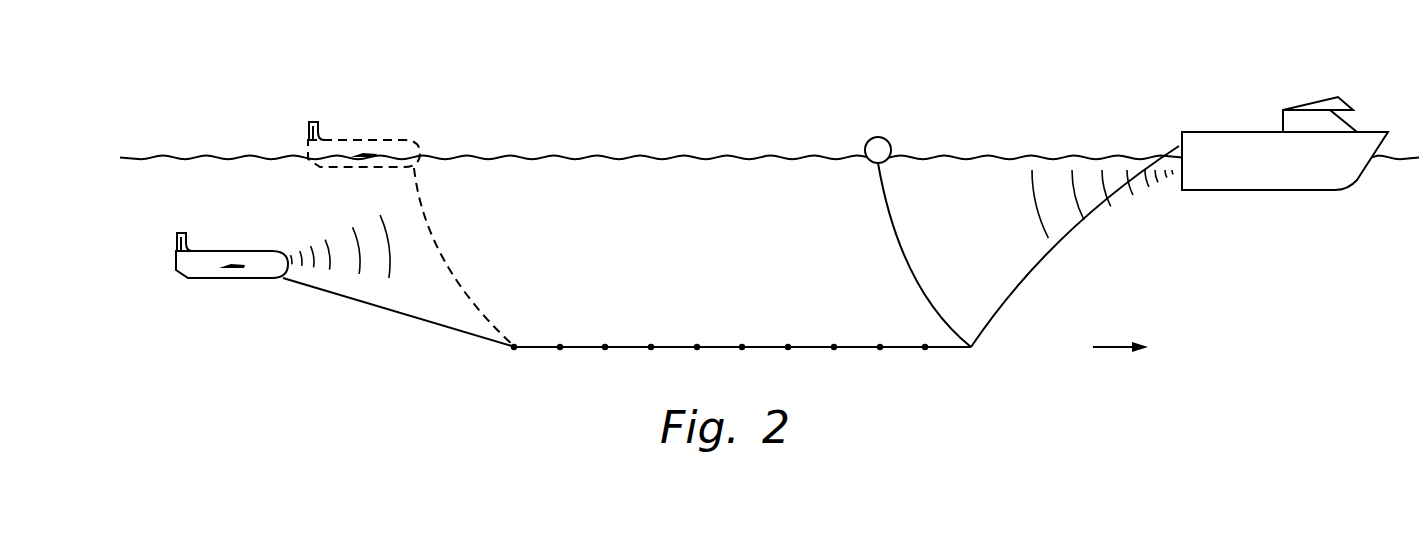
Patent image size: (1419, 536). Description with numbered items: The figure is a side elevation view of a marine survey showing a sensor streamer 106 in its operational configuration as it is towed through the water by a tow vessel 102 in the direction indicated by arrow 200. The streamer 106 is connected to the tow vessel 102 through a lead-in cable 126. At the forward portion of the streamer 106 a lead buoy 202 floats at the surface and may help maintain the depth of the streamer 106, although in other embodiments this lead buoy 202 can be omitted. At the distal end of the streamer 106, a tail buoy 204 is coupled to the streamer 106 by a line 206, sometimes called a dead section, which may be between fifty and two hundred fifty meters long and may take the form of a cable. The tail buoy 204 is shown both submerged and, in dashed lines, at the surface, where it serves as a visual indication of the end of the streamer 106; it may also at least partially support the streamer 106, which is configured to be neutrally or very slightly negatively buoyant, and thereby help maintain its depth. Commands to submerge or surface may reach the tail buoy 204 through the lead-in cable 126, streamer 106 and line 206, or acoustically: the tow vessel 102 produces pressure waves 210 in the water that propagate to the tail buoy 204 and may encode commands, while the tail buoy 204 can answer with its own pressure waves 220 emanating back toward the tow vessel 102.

The tow vessel 102 is at (1238, 132).
The sensor streamer 106 is at (673, 346).
The lead-in cable 126 is at (1038, 272).
The arrow 200 is at (1103, 348).
The lead buoy 202 is at (878, 137).
The tail buoy 204 is at (208, 279).
The line 206 is at (355, 308).
The pressure waves 210 is at (1033, 204).
The pressure waves 220 is at (386, 263).